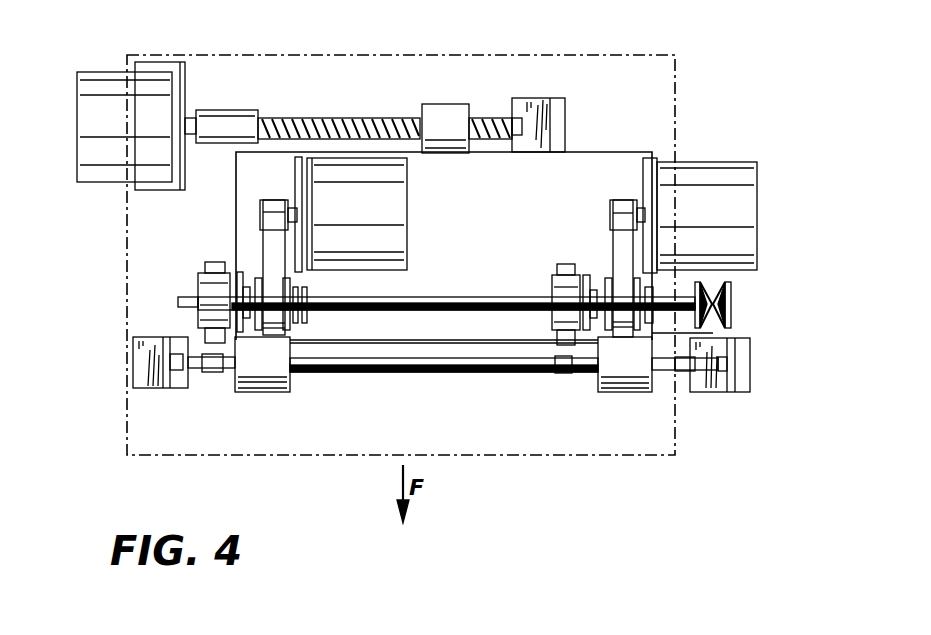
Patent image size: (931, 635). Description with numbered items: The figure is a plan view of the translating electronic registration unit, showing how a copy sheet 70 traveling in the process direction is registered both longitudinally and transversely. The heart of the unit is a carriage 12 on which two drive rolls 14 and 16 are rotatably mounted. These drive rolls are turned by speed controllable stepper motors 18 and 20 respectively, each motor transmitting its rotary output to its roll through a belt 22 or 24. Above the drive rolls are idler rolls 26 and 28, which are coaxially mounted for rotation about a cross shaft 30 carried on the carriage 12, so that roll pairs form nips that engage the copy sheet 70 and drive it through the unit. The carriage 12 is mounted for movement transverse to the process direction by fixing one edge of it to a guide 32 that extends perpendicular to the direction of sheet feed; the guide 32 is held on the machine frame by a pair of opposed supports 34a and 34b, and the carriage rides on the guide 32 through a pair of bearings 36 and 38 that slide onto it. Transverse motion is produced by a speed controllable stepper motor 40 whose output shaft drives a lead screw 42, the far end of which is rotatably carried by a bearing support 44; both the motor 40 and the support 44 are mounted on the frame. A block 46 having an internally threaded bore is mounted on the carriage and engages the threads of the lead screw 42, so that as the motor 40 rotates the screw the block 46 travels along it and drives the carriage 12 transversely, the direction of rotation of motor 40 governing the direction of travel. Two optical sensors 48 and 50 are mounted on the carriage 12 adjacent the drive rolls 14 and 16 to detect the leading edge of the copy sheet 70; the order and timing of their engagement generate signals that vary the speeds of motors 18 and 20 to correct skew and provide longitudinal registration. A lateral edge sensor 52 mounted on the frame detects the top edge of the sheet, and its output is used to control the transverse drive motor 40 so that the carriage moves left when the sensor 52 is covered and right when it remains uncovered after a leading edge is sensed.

The carriage 12 is at (601, 140).
The drive roll 14 is at (565, 264).
The drive roll 16 is at (205, 262).
The drive motor 18 is at (705, 161).
The drive motor 20 is at (408, 203).
The belt 22 is at (621, 191).
The belt 24 is at (266, 190).
The idler roll 26 is at (536, 290).
The idler roll 28 is at (184, 288).
The cross shaft 30 is at (400, 297).
The guide 32 is at (400, 362).
The support 34a is at (134, 360).
The support 34b is at (751, 356).
The bearing 36 is at (616, 393).
The bearing 38 is at (280, 393).
The stepper motor 40 is at (95, 71).
The lead screw 42 is at (328, 117).
The bearing support 44 is at (545, 98).
The block 46 is at (450, 103).
The sensor 48 is at (573, 373).
The sensor 50 is at (218, 372).
The lateral edge sensor 52 is at (685, 372).
The copy sheet 70 is at (597, 455).